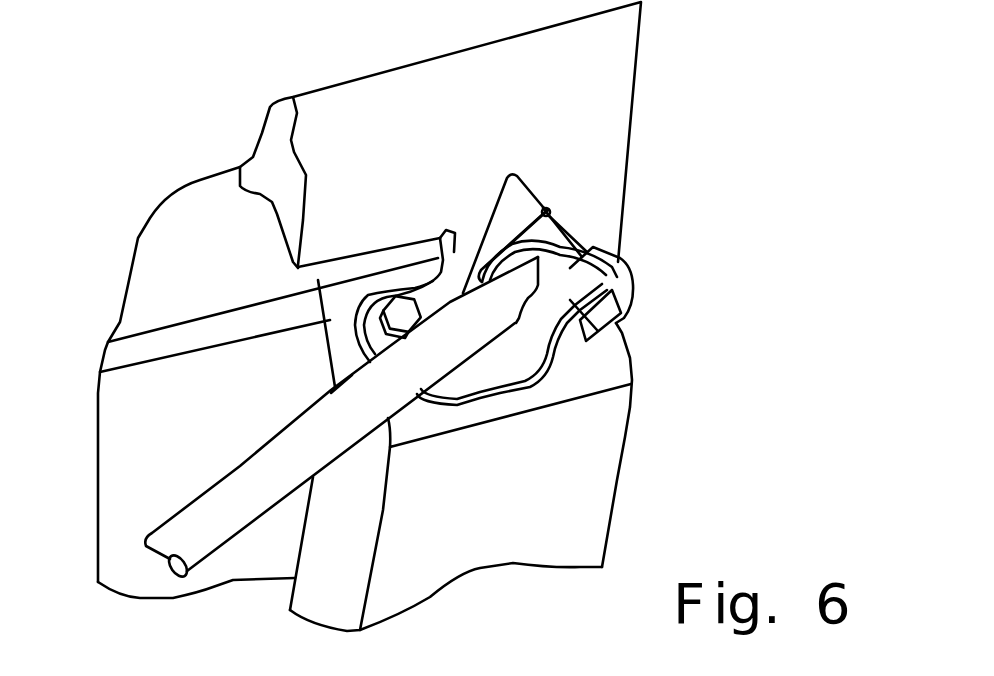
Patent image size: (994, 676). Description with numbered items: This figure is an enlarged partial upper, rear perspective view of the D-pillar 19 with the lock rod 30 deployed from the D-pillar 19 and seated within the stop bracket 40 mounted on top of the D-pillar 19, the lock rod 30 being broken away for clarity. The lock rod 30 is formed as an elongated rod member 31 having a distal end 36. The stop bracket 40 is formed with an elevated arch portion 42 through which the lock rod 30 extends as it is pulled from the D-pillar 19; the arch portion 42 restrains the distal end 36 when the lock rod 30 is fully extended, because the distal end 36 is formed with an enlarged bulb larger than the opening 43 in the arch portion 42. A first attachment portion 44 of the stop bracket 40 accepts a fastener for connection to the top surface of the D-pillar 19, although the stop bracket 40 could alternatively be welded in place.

The D-pillar 19 is at (600, 478).
The lock rod 30 is at (167, 560).
The elongated rod member 31 is at (243, 473).
The distal end 36 is at (557, 260).
The stop bracket 40 is at (441, 197).
The elevated arch portion 42 is at (621, 322).
The opening 43 is at (568, 205).
The first attachment portion 44 is at (530, 362).